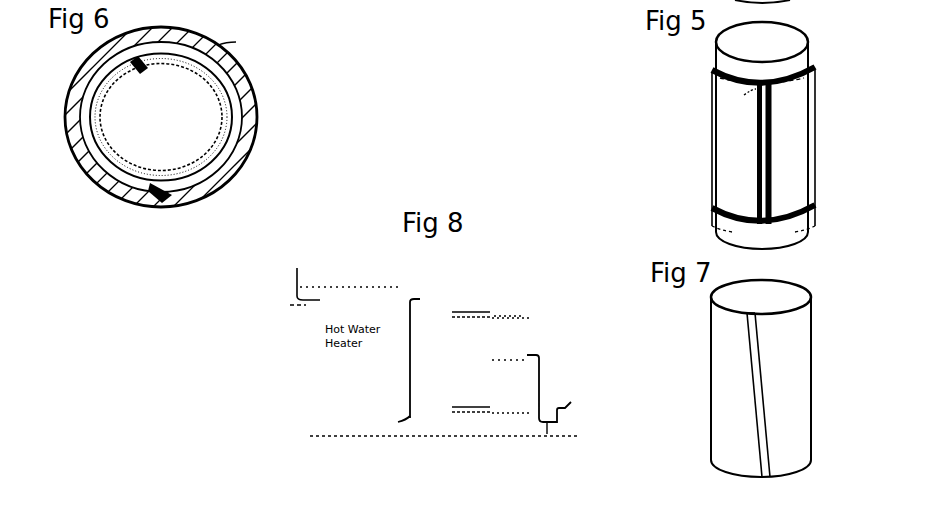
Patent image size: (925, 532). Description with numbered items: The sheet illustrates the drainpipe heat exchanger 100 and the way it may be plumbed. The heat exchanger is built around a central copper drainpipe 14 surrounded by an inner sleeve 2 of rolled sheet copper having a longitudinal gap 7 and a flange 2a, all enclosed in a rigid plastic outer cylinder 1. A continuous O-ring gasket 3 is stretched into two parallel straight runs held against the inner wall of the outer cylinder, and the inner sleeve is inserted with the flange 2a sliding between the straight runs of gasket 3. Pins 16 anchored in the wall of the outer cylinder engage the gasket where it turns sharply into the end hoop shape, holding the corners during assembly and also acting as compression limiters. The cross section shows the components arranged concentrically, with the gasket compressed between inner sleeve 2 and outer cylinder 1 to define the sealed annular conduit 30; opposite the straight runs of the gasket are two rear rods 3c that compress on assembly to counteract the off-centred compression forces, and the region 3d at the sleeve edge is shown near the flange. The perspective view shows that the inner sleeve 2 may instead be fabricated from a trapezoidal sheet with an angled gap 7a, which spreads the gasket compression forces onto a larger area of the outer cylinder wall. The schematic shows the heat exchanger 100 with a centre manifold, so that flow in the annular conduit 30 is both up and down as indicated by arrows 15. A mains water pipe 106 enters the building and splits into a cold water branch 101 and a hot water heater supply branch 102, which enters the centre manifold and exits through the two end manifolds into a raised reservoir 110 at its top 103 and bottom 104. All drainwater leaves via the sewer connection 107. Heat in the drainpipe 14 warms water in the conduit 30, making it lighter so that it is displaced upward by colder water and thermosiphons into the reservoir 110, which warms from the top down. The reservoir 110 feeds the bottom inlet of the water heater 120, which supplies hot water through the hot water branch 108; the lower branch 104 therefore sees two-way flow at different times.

In FIG. 6, the outer cylinder 1 is at (104, 67).
In FIG. 6, the inner sleeve 2 is at (62, 146).
In FIG. 5, the inner sleeve 2 is at (718, 148).
In FIG. 7, the inner sleeve 2 is at (712, 336).
In FIG. 6, the flange 2a is at (149, 213).
In FIG. 6, the gasket 3 is at (134, 206).
In FIG. 5, the gasket 3 is at (712, 72).
In FIG. 6, the rear rods 3c is at (94, 54).
In FIG. 6, the band slot 3d is at (165, 202).
In FIG. 6, the gap 7 is at (162, 176).
In FIG. 7, the angled gap 7a is at (752, 312).
In FIG. 6, the drainpipe 14 is at (95, 176).
In FIG. 5, the drainpipe 14 is at (714, 50).
In FIG. 8, the drainpipe 14 is at (526, 280).
In FIG. 8, the arrows 15 is at (535, 317).
In FIG. 5, the pins 16 is at (755, 98).
In FIG. 6, the annular conduit 30 is at (230, 114).
In FIG. 6, the drainpipe heat exchanger 100 is at (273, 78).
In FIG. 8, the drainpipe heat exchanger 100 is at (538, 294).
In FIG. 8, the cold water branch 101 is at (562, 400).
In FIG. 8, the hot water heater supply branch 102 is at (544, 354).
In FIG. 8, the top of reservoir 103 is at (524, 284).
In FIG. 8, the bottom of reservoir 104 is at (492, 386).
In FIG. 8, the mains water pipe 106 is at (456, 432).
In FIG. 8, the sewer connection 107 is at (477, 474).
In FIG. 8, the hot water branch 108 is at (345, 280).
In FIG. 8, the reservoir 110 is at (440, 284).
In FIG. 8, the water heater 120 is at (366, 281).